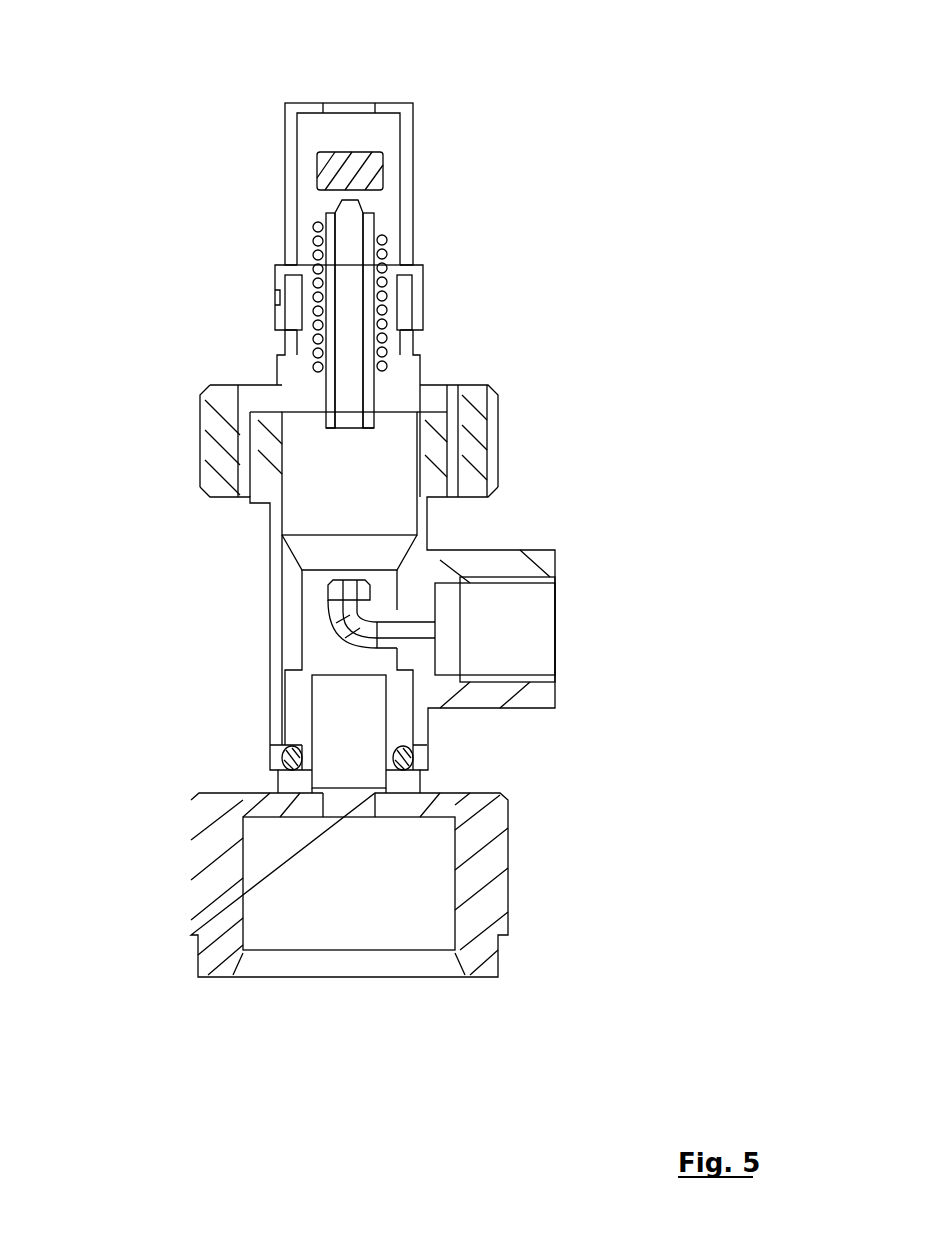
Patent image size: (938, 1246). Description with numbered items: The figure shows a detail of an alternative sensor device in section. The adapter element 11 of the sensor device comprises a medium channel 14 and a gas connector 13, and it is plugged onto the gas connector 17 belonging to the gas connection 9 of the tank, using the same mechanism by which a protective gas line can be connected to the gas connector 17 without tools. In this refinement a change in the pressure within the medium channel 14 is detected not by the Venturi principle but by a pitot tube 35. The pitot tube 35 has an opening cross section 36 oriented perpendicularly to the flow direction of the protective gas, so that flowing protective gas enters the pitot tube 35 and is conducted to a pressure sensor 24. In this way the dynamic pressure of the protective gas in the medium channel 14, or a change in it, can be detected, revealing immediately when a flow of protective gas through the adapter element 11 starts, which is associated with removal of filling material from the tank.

The adapter element 11 is at (170, 300).
The gas connector 13 is at (428, 300).
The medium channel 14 is at (387, 458).
The pressure sensor 24 is at (450, 610).
The opening cross section 36 is at (348, 580).
The pitot tube 35 is at (320, 606).
The gas connector 17 is at (360, 737).
The gas connection 9 is at (493, 880).